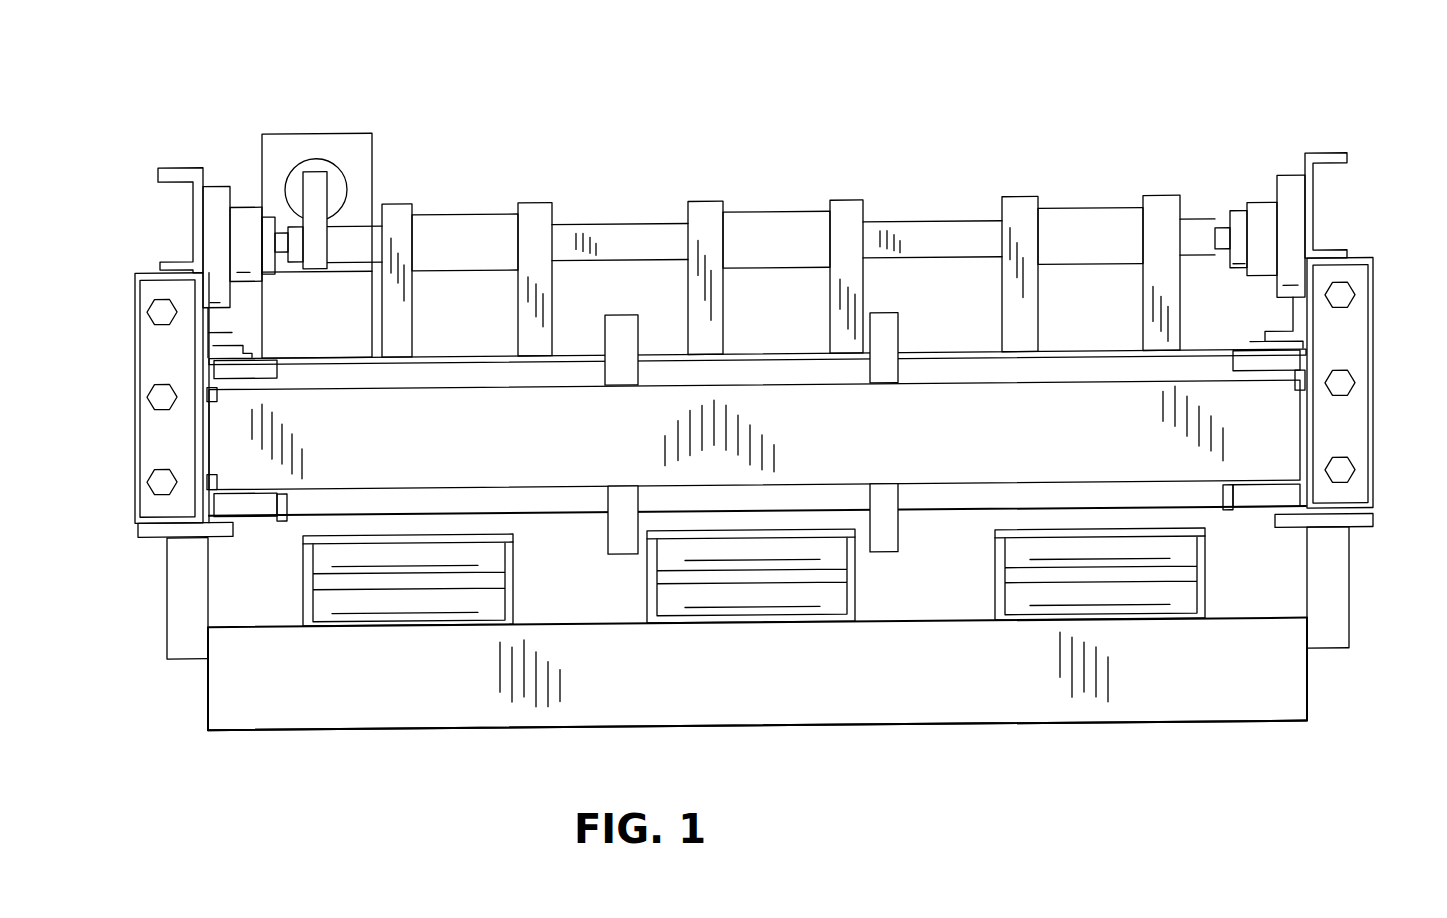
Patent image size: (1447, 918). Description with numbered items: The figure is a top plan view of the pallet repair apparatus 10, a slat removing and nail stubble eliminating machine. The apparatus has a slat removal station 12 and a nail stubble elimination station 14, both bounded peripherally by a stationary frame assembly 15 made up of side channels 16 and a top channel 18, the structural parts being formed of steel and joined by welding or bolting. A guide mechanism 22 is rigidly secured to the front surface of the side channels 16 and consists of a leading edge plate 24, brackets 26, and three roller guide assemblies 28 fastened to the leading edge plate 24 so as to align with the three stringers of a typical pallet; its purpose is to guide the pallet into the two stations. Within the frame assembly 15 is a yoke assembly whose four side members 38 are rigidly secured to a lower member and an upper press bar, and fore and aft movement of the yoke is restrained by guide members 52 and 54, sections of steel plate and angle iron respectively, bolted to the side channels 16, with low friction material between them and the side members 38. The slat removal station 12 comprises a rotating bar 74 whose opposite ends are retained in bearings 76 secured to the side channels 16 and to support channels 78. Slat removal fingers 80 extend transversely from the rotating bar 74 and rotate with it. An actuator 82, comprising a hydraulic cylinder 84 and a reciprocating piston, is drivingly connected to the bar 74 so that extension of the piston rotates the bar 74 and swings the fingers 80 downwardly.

The pallet repair apparatus 10 is at (1300, 86).
The slat removal station 12 is at (922, 322).
The nail stubble elimination station 14 is at (982, 453).
The stationary frame assembly 15 is at (1391, 455).
The side channels 16 is at (144, 373).
The top channel 18 is at (237, 414).
The guide mechanism 22 is at (903, 727).
The leading edge plate 24 is at (738, 702).
The brackets 26 is at (183, 610).
The roller guide assemblies 28 is at (513, 600).
The side members 38 is at (212, 365).
The guide members 52 is at (157, 533).
The guide members 54 is at (213, 329).
The rotating bar 74 is at (606, 233).
The bearings 76 is at (244, 208).
The support channels 78 is at (176, 163).
The slat removal fingers 80 is at (396, 203).
The actuator 82 is at (299, 140).
The hydraulic cylinder 84 is at (347, 171).